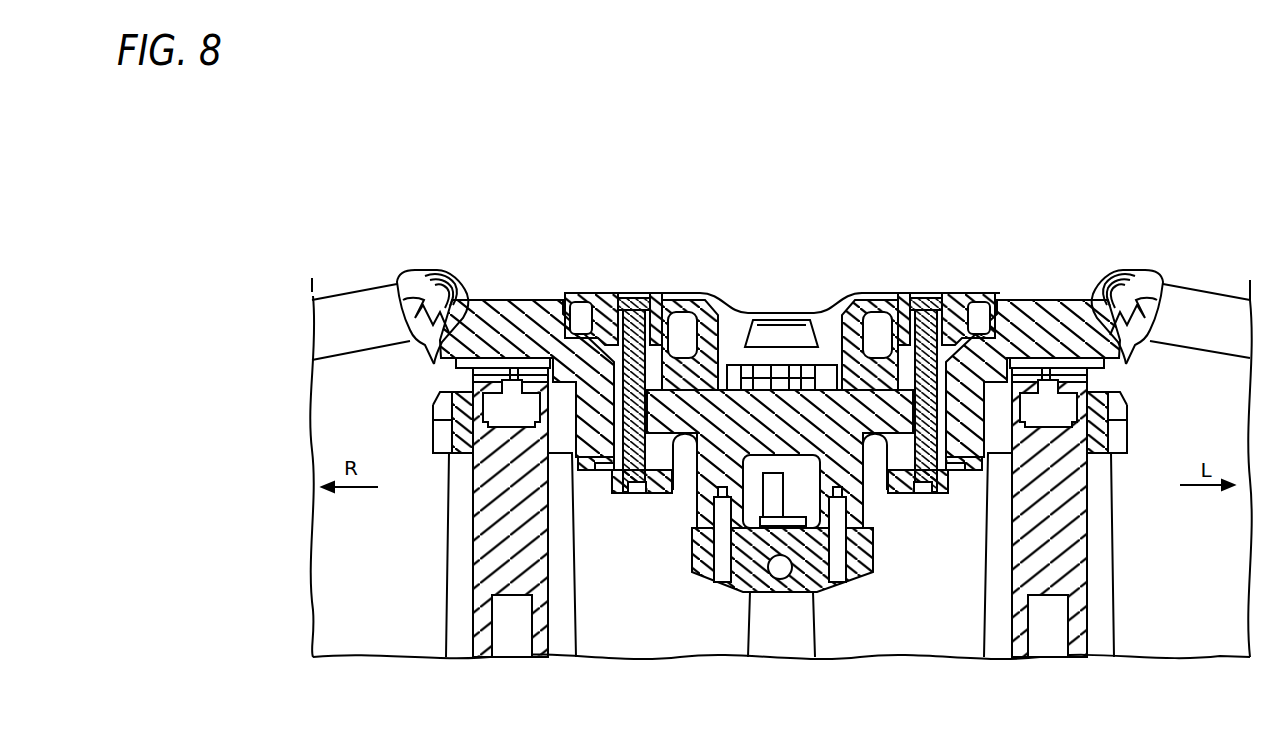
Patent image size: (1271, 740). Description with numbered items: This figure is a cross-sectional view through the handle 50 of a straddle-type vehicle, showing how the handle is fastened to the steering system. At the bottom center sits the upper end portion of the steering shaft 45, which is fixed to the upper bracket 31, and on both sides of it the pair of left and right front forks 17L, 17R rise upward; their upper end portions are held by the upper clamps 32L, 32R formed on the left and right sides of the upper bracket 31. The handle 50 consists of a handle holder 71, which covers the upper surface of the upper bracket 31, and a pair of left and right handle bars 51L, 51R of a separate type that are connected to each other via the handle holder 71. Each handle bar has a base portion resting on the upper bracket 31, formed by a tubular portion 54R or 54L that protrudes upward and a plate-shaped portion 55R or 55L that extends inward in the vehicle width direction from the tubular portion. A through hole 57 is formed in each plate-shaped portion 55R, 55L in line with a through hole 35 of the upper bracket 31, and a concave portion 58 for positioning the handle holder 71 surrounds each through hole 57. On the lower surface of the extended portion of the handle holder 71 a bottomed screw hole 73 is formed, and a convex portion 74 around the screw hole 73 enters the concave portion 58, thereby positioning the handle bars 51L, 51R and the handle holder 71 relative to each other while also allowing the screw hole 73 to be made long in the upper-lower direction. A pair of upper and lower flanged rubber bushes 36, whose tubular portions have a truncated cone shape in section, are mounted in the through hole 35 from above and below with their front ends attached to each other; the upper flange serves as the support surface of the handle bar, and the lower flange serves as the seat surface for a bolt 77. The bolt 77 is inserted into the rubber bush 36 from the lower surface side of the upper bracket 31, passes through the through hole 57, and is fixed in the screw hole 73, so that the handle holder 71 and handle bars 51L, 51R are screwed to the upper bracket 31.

The handle 50 is at (614, 231).
The right handle bar 51R is at (365, 292).
The left handle bar 51L is at (1208, 292).
The tubular portion 54R is at (522, 300).
The tubular portion 54L is at (1053, 300).
The convex portion 74 is at (592, 294).
The screw hole 73 is at (637, 298).
The concave portion 58 is at (658, 296).
The through hole 57 is at (672, 300).
The plate-shaped portion 55R is at (742, 313).
The plate-shaped portion 55L is at (820, 313).
The handle holder 71 is at (768, 313).
The upper clamp 32R is at (440, 412).
The upper clamp 32L is at (1124, 413).
The upper bracket 31 is at (1146, 429).
The right front fork 17R is at (457, 547).
The left front fork 17L is at (1105, 547).
The rubber bush 36 is at (596, 471).
The through hole 35 is at (664, 495).
The bolt 77 is at (650, 503).
The steering shaft 45 is at (813, 631).